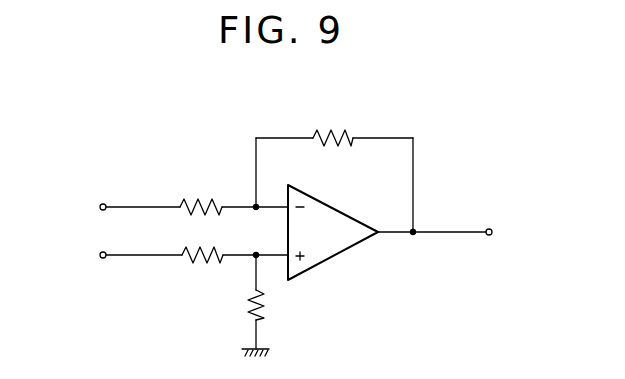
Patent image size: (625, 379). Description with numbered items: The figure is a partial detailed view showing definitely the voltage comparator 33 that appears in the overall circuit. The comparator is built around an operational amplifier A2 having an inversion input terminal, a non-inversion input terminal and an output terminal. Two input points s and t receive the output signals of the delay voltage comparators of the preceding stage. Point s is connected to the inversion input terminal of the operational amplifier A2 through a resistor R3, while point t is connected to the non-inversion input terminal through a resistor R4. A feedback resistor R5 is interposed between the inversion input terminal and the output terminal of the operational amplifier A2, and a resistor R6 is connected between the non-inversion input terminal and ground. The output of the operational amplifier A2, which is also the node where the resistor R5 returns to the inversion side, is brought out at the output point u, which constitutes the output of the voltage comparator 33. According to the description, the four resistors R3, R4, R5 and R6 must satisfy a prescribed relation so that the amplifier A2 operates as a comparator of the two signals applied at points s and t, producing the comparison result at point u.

The resistor R3 is at (200, 196).
The resistor R4 is at (197, 264).
The resistor R5 is at (335, 125).
The resistor R6 is at (268, 303).
The operational amplifier A2 is at (360, 237).
The voltage comparator 33 is at (447, 320).
The point s is at (126, 208).
The point t is at (127, 257).
The output point u is at (435, 224).